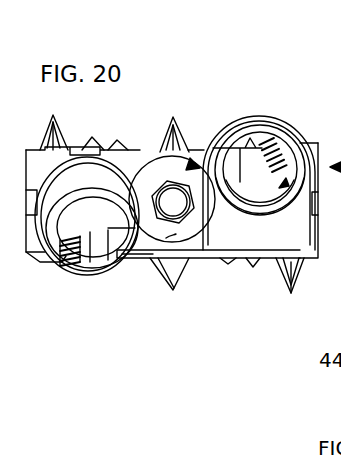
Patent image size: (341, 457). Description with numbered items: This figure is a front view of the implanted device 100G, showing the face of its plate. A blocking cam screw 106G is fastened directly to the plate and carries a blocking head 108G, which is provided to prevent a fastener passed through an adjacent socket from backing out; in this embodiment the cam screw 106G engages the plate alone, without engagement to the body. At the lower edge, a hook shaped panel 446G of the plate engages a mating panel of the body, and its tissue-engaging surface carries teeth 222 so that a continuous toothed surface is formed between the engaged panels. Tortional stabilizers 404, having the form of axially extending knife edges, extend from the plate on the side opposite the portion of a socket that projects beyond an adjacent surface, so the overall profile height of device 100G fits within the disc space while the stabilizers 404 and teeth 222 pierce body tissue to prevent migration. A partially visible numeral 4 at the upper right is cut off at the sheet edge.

The device 100G is at (105, 384).
The teeth 222 is at (247, 278).
The tortional stabilizers 404 is at (158, 128).
The blocking cam screw 106G is at (204, 148).
The blocking head 108G is at (165, 240).
The hook shaped panel 446G is at (98, 258).
The partial numeral (cut off) 4 is at (318, 150).